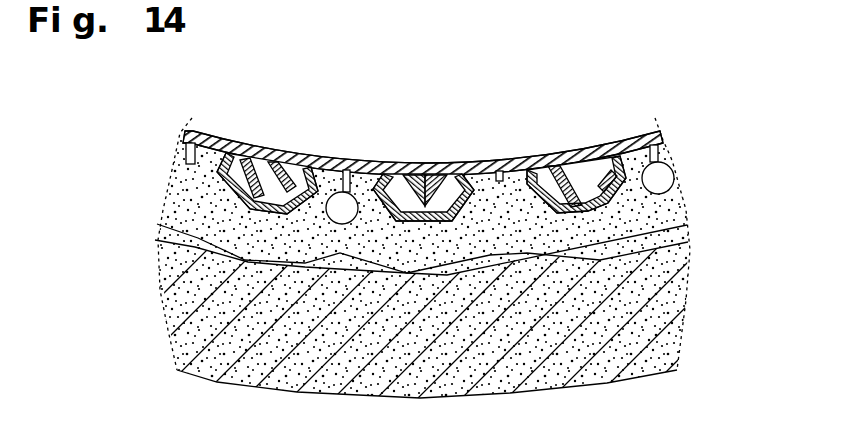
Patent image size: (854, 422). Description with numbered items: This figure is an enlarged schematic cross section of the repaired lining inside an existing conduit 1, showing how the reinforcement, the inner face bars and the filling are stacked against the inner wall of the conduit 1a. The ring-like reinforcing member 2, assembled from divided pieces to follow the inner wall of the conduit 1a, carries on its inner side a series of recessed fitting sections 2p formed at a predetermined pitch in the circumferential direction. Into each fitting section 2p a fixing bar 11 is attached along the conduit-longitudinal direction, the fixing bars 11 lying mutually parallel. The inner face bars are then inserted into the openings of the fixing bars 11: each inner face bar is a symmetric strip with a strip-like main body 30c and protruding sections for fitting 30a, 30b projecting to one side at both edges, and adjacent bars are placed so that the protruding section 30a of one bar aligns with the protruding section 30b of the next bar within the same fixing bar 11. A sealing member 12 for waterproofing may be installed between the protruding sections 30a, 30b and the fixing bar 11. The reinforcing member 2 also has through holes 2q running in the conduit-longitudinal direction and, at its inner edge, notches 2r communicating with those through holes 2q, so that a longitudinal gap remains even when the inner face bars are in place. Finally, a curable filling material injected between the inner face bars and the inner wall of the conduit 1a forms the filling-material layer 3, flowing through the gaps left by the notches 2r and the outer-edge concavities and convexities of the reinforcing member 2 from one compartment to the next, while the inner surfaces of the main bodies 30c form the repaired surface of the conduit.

The existing conduit 1 is at (640, 326).
The inner wall of the conduit 1a is at (177, 248).
The reinforcing member 2 is at (650, 212).
The fitting section 2p is at (291, 150).
The through hole 2q is at (660, 178).
The notch 2r is at (346, 185).
The filling-material layer 3 is at (200, 203).
The fixing bar 11 is at (232, 172).
The sealing member 12 is at (265, 162).
The protruding section for fitting 30a is at (442, 174).
The protruding section for fitting 30b is at (555, 193).
The strip-like main body 30c is at (500, 181).